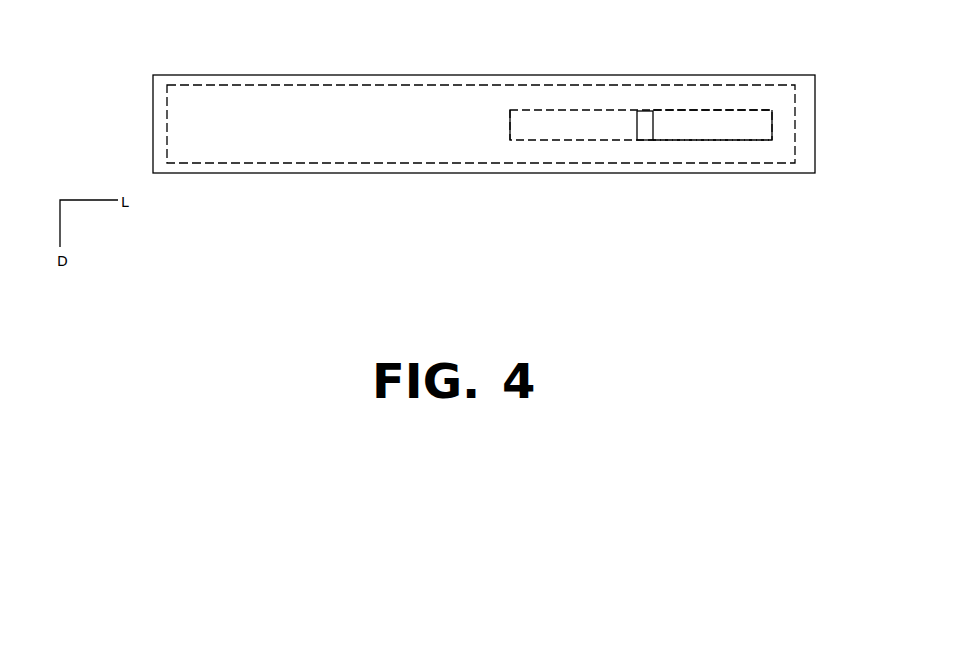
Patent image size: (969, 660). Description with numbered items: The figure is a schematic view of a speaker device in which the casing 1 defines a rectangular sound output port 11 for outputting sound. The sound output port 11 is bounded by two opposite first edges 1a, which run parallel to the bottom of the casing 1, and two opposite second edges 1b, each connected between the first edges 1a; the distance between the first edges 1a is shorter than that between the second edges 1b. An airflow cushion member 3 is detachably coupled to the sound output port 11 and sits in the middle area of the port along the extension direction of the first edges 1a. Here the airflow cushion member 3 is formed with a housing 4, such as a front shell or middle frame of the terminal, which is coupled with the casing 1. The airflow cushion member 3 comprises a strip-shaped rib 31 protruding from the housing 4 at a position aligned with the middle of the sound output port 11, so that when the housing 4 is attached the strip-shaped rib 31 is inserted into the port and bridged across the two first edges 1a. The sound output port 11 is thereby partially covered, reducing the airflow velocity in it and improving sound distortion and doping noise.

The casing 1 is at (315, 98).
The first edges 1a is at (570, 110).
The second edges 1b is at (508, 120).
The airflow cushion member 3 is at (684, 114).
The housing 4 is at (345, 165).
The sound output port 11 is at (728, 127).
The strip-shaped rib 31 is at (645, 123).